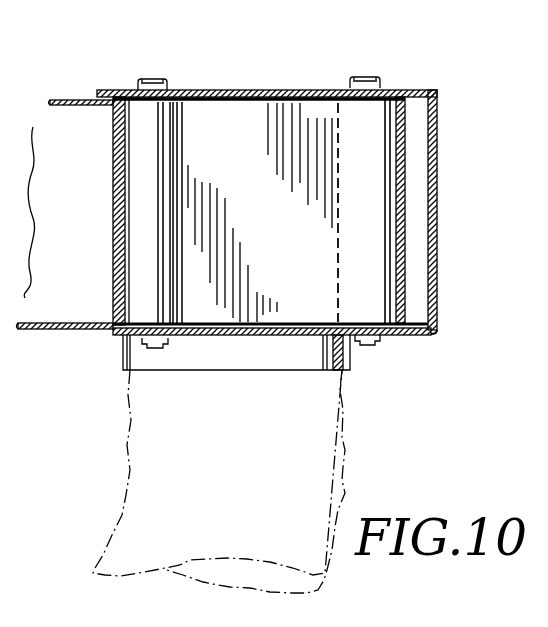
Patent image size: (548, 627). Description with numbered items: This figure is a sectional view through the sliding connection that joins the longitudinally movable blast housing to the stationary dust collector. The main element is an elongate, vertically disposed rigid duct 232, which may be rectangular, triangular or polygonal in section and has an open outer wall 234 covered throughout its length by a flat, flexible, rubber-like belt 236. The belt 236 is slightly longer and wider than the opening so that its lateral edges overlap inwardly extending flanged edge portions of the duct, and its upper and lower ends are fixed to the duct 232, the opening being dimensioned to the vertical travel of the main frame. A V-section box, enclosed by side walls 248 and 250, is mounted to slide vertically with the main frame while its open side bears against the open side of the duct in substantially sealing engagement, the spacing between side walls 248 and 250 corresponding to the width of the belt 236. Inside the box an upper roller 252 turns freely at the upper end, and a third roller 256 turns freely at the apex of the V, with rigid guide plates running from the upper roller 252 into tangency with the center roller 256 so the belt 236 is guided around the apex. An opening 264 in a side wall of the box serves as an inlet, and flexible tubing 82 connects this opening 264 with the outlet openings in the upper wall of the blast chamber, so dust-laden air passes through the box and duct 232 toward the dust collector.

The rigid duct 232 is at (40, 124).
The open outer wall 234 is at (112, 182).
The belt 236 is at (113, 226).
The side wall 248 is at (397, 90).
The side wall 250 is at (418, 334).
The upper roller 252 is at (172, 150).
The third roller 256 is at (336, 246).
The opening 264 is at (328, 372).
The flexible tubing 82 is at (348, 452).